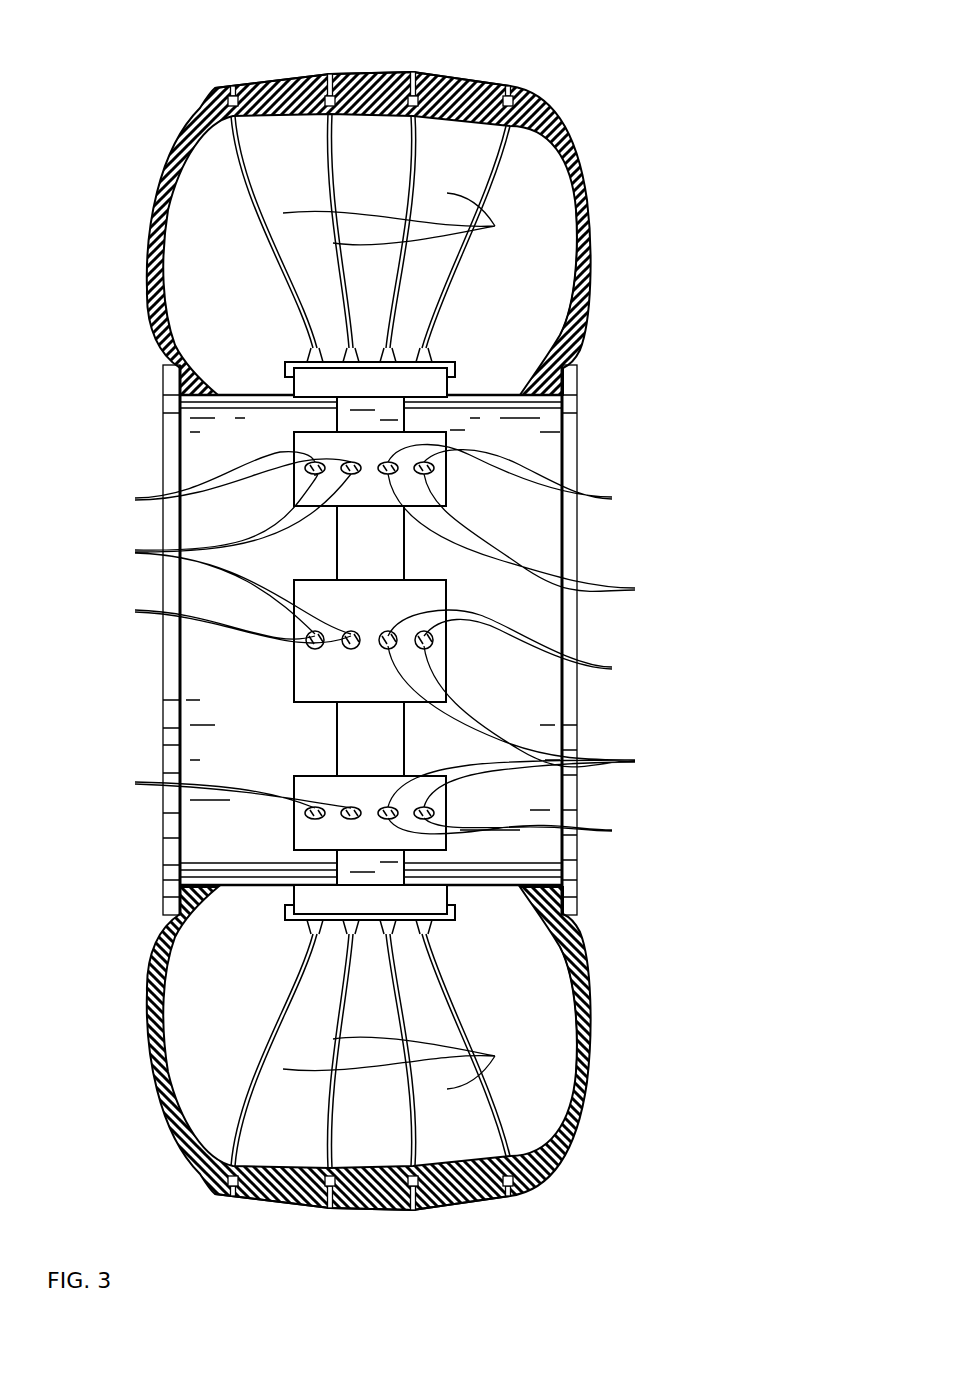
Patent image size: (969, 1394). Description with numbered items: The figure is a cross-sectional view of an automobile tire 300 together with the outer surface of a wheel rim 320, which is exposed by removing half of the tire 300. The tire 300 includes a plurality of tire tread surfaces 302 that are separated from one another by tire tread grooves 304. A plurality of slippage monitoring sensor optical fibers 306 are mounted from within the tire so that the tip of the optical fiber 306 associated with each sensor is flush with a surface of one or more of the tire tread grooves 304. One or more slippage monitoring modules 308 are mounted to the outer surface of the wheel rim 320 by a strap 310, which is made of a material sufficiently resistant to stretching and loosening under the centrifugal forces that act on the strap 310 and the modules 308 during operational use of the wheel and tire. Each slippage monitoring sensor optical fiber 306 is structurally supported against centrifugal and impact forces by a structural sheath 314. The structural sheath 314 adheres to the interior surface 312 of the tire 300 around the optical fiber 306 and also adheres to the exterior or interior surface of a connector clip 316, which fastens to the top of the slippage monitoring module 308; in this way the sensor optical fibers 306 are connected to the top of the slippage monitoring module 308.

The tire 300 is at (552, 104).
The tire tread surface 302 is at (324, 74).
The tire tread groove 304 is at (233, 86).
The slippage monitoring sensor optical fiber 306 is at (182, 116).
The slippage monitoring module 308 is at (447, 385).
The strap 310 is at (337, 413).
The interior surface 312 is at (522, 130).
The structural sheath 314 is at (495, 226).
The connector clip 316 is at (452, 362).
The wheel rim 320 is at (577, 648).